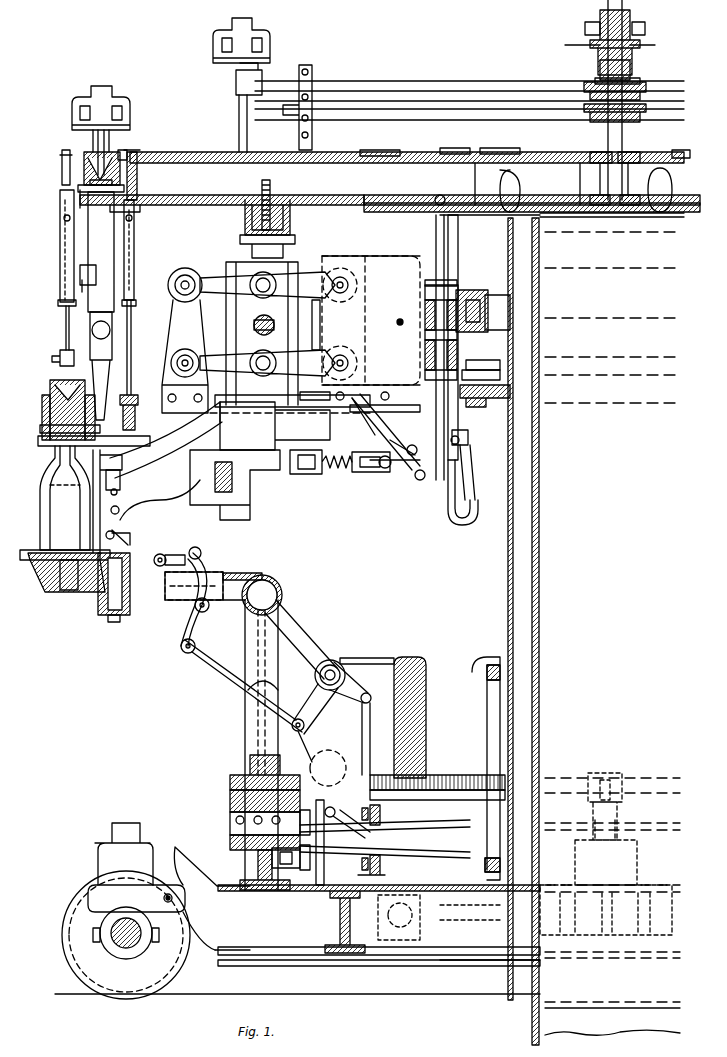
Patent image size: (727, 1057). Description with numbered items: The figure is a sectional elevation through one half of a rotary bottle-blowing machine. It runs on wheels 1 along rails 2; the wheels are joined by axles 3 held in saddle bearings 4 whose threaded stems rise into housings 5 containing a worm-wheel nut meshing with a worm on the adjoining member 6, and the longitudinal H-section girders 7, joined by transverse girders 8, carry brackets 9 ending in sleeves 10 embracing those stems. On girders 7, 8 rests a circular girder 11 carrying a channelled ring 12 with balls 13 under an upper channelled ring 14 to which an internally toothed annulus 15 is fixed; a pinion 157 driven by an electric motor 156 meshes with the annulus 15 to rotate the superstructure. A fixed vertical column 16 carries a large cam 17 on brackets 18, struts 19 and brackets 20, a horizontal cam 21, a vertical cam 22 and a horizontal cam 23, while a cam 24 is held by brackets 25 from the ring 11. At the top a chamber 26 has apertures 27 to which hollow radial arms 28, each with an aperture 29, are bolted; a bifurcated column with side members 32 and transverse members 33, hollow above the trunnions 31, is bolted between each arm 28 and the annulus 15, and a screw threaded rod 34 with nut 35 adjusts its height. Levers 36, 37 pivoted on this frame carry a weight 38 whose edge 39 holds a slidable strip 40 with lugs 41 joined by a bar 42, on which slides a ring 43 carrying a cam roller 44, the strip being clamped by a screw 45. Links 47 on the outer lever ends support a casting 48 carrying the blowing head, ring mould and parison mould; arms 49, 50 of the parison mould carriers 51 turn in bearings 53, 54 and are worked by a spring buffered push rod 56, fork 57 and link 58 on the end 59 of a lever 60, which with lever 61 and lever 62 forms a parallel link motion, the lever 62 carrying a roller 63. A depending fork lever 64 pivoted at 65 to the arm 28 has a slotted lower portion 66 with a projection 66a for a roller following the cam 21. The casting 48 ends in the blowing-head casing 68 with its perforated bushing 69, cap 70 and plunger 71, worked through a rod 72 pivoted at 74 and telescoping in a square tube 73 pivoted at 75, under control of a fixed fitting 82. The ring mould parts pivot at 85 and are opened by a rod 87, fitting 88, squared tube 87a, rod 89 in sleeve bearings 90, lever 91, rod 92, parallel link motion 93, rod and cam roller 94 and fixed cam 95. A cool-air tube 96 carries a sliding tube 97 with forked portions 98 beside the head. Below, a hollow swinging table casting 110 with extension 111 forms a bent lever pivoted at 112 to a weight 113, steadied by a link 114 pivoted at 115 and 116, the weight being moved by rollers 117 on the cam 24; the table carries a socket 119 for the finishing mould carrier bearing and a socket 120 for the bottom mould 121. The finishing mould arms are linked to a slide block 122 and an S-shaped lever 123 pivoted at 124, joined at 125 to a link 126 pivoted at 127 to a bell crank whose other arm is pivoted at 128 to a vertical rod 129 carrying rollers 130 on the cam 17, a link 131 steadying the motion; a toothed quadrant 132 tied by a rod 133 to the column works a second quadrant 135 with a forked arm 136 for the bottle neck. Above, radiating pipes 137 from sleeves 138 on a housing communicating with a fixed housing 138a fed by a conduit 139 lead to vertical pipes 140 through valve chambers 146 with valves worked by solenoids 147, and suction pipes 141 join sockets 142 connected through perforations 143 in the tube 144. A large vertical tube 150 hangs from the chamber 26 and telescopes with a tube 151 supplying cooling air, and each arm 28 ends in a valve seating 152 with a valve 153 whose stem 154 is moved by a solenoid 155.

The wheels 1 is at (66, 955).
The rails 2 is at (190, 995).
The axles 3 is at (135, 945).
The saddle bearings 4 is at (99, 928).
The housing or casing 5 is at (78, 900).
The bearing bracket 6 is at (183, 895).
The longitudinal H-section girders 7 is at (455, 955).
The transverse girders 8 is at (340, 898).
The brackets or extensions 9 is at (178, 848).
The sleeves 10 is at (98, 852).
The circular girder 11 is at (258, 835).
The channelled ring 12 is at (232, 818).
The balls 13 is at (230, 800).
The upper channelled ring 14 is at (230, 790).
The internally toothed annulus 15 is at (230, 780).
The vertical column 16 is at (515, 486).
The large cam 17 is at (390, 835).
The brackets 18 is at (433, 848).
The vertical struts 19 is at (470, 805).
The brackets 20 is at (497, 660).
The horizontal cam 21 is at (488, 362).
The vertical cam 22 is at (510, 312).
The horizontal cam 23 is at (446, 278).
The cam 24 is at (272, 852).
The brackets 25 is at (350, 830).
The chamber 26 is at (527, 184).
The circular aperture 27 is at (515, 170).
The hollow arm 28 is at (505, 196).
The aperture 29 is at (252, 205).
The trunnions 31 is at (283, 590).
The side members 32 is at (232, 313).
The transverse members 33 is at (272, 330).
The screw threaded rod 34 is at (270, 192).
The nut 35 is at (295, 240).
The lever 36 is at (215, 272).
The lever 37 is at (228, 348).
The weight 38 is at (332, 325).
The inner edge 39 is at (420, 262).
The strip 40 is at (410, 358).
The projecting lugs 41 is at (458, 284).
The bar 42 is at (460, 292).
The ring 43 is at (456, 302).
The cam roller 44 is at (479, 365).
The screw 45 is at (400, 319).
The links 47 is at (175, 328).
The casting 48 is at (318, 406).
The arm 49 is at (200, 445).
The arm 50 is at (232, 495).
The parison mould carriers 51 is at (121, 482).
The bearing 53 is at (275, 426).
The bearing 54 is at (245, 497).
The spring buffered push rod 56 is at (334, 472).
The fork 57 is at (510, 392).
The pivoted link 58 is at (378, 474).
The end of lever 59 is at (417, 464).
The link or lever 60 is at (400, 410).
The link or lever 61 is at (360, 420).
The lever 62 is at (400, 468).
The roller 63 is at (476, 468).
The depending lever 64 is at (440, 228).
The pivot 65 is at (442, 197).
The lower portion 66 is at (478, 494).
The projection 66a is at (470, 440).
The chamber 68 is at (42, 440).
The bushing or sleeve 69 is at (44, 426).
The cap 70 is at (48, 400).
The plunger 71 is at (55, 385).
The rod 72 is at (66, 328).
The square tube 73 is at (60, 246).
The pivot 74 is at (60, 352).
The pivot 75 is at (60, 212).
The non-rotatable fitting 82 is at (670, 152).
The pivot 85 is at (110, 498).
The rod 87 is at (131, 370).
The squared tube 87a is at (134, 262).
The fitting 88 is at (138, 398).
The rod 89 is at (137, 168).
The sleeve bearings 90 is at (140, 204).
The lever 91 is at (128, 152).
The rod 92 is at (200, 152).
The parallel link motion 93 is at (375, 150).
The rod and cam roller 94 is at (460, 148).
The fixed cam 95 is at (500, 148).
The tube 96 is at (112, 242).
The tube 97 is at (168, 287).
The forked portions 98 is at (96, 375).
The casting 110 is at (214, 570).
The extension 111 is at (304, 624).
The pivot 112 is at (336, 662).
The weight 113 is at (378, 662).
The link 114 is at (258, 728).
The pivot 115 is at (250, 698).
The pivot 116 is at (328, 768).
The rollers 117 is at (320, 805).
The socket 119 is at (106, 615).
The socket 120 is at (70, 592).
The bottom mould 121 is at (58, 547).
The slide block 122 is at (160, 554).
The S-shaped lever 123 is at (192, 608).
The pivot 124 is at (210, 610).
The connection 125 is at (181, 648).
The link 126 is at (205, 660).
The pivot 127 is at (298, 716).
The pivot 128 is at (372, 700).
The vertical rod 129 is at (428, 752).
The rollers 130 is at (382, 810).
The link 131 is at (340, 870).
The toothed quadrant 132 is at (127, 532).
The rod 133 is at (135, 537).
The toothed quadrant 135 is at (119, 508).
The forked arm 136 is at (178, 510).
The radiating pipes 137 is at (418, 88).
The sleeves 138 is at (592, 80).
The fixed air tight housing 138a is at (588, 20).
The conduit 139 is at (590, 45).
The vertical pipes 140 is at (240, 125).
The radiating pipes 141 is at (463, 110).
The sockets 142 is at (596, 144).
The perforations 143 is at (622, 122).
The tube 144 is at (632, 68).
The valve chambers 146 is at (238, 84).
The solenoids 147 is at (270, 38).
The large vertical tube 150 is at (540, 636).
The tube 151 is at (531, 1022).
The valve chamber or seating 152 is at (78, 188).
The valve 153 is at (84, 160).
The stem 154 is at (109, 140).
The solenoid 155 is at (130, 100).
The electric motor 156 is at (380, 940).
The pinion 157 is at (600, 775).